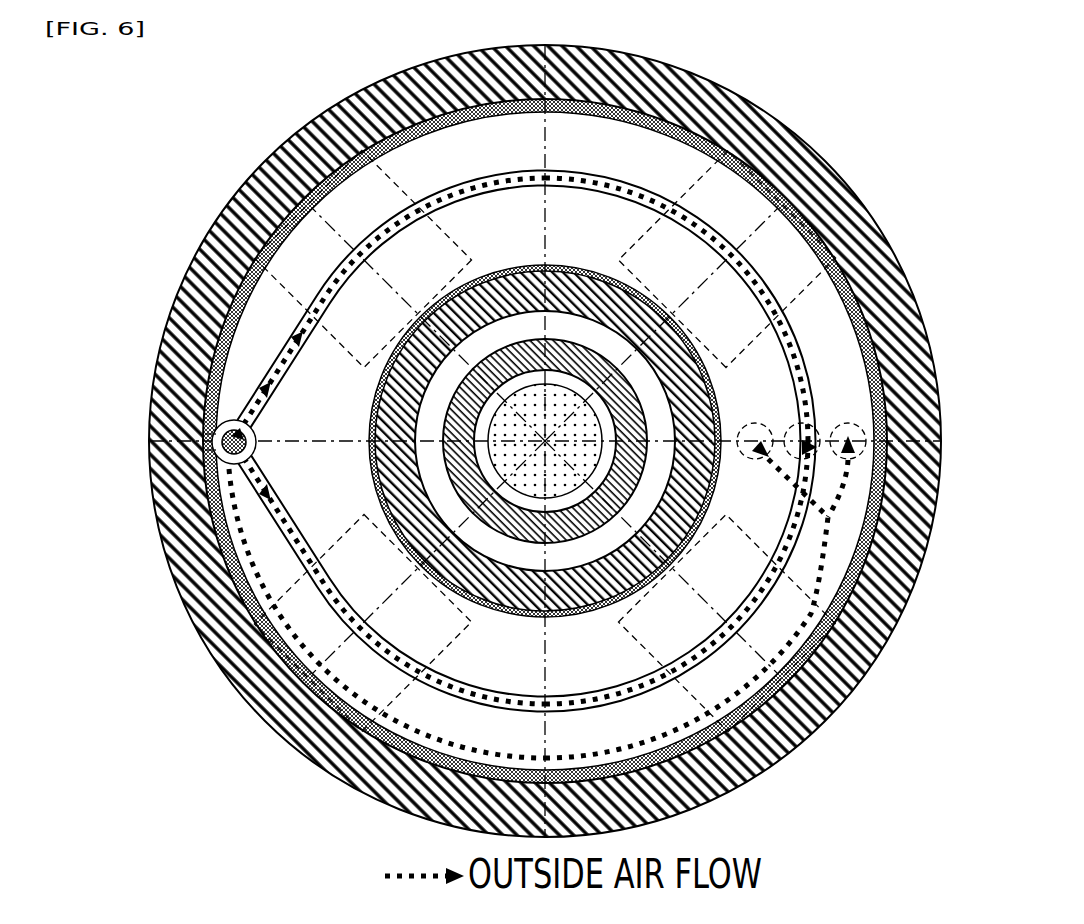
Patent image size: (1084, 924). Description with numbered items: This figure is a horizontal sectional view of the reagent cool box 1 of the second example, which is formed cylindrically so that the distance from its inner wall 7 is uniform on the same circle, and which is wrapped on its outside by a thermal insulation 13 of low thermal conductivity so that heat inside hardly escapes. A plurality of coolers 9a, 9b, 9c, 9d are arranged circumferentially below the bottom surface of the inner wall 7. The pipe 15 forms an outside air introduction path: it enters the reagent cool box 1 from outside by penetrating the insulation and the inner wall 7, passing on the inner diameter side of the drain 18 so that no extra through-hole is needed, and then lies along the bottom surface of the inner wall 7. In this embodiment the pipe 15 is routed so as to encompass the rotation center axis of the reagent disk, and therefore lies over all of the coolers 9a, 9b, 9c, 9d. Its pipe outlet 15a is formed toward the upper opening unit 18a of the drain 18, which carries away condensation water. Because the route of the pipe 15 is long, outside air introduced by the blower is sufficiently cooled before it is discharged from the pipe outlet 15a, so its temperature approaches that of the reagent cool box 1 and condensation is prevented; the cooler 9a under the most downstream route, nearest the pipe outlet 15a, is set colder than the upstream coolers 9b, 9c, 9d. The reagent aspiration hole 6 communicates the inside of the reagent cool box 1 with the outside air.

The reagent cool box 1 is at (553, 441).
The reagent aspiration hole 6 is at (847, 350).
The inner wall 7 is at (569, 441).
The cooler 9a is at (337, 275).
The cooler 9b is at (382, 620).
The cooler 9c is at (740, 605).
The cooler 9d is at (676, 246).
The thermal insulation 13 is at (469, 441).
The pipe 15 is at (524, 395).
The pipe outlet 15a is at (149, 379).
The drain 18 is at (153, 402).
The upper opening unit 18a is at (143, 486).